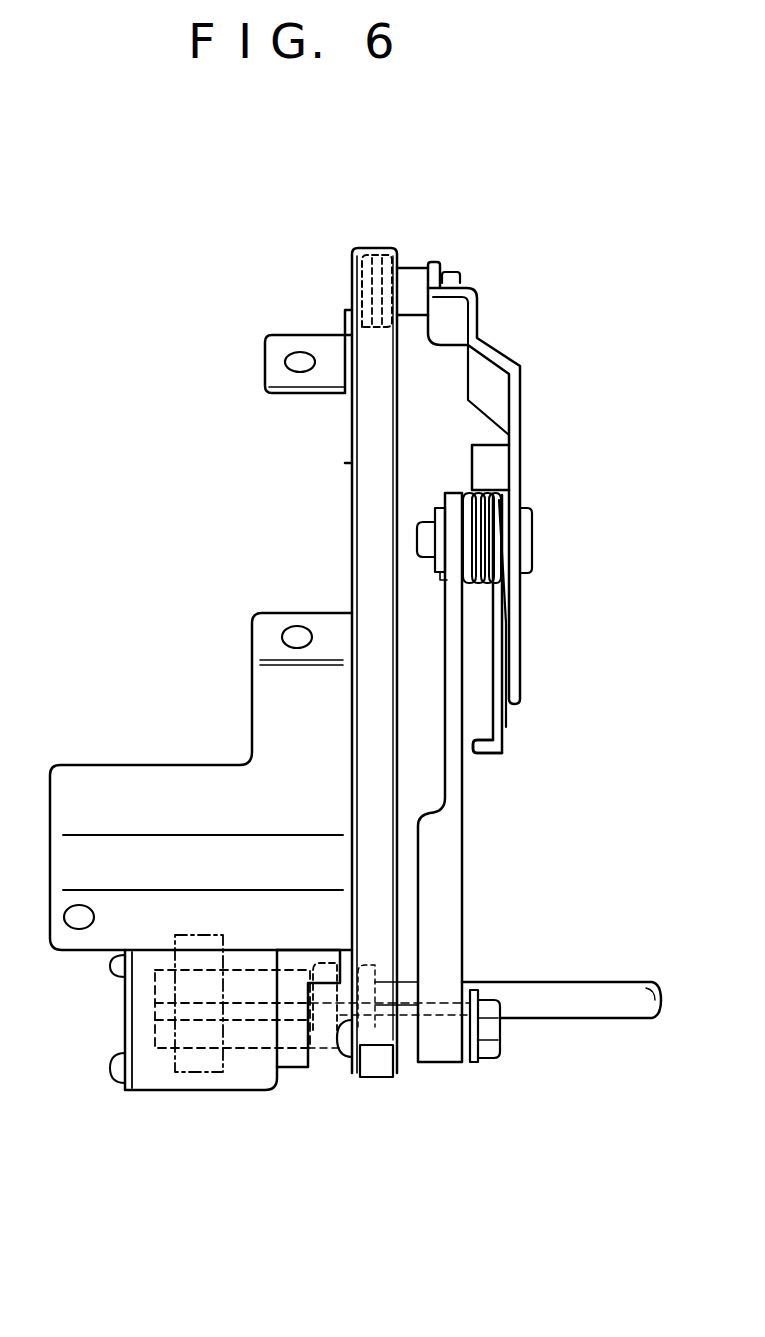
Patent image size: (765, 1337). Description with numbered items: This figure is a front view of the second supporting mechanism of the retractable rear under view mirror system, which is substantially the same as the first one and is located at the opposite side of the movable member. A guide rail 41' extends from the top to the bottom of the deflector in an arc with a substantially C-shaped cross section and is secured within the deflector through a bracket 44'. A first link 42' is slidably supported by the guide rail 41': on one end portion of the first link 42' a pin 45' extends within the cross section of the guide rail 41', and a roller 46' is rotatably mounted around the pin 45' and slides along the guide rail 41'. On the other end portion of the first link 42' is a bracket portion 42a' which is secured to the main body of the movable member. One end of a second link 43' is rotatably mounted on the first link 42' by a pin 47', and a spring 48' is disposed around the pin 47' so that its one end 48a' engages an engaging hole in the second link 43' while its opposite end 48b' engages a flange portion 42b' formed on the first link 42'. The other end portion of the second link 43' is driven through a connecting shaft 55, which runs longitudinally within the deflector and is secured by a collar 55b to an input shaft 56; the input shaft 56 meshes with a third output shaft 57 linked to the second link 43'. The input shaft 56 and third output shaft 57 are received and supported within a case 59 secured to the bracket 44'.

The guide rail 41' is at (376, 662).
The first link 42' is at (509, 483).
The bracket portion 42a' is at (565, 613).
The flange portion 42b' is at (542, 467).
The second link 43' is at (482, 777).
The bracket 44' is at (201, 630).
The pin 45' is at (428, 259).
The roller 46' is at (381, 247).
The pin 47' is at (542, 538).
The spring 48' is at (523, 624).
The one end of spring 48a' is at (356, 545).
The opposite end of spring 48b' is at (550, 755).
The connecting shaft 55 is at (545, 997).
The collar 55b is at (335, 1018).
The input shaft 56 is at (248, 989).
The third output shaft 57 is at (247, 1035).
The case 59 is at (150, 1068).